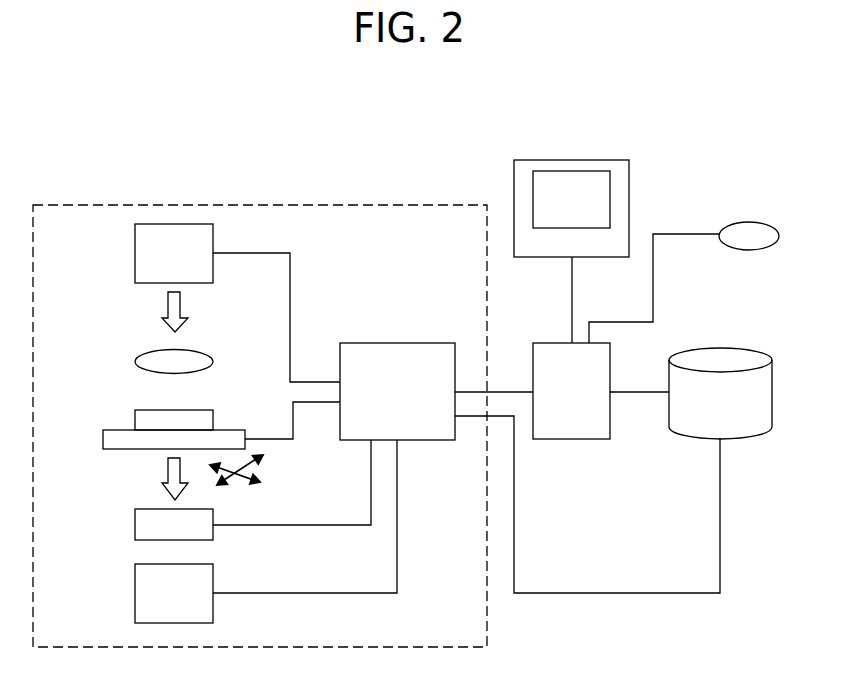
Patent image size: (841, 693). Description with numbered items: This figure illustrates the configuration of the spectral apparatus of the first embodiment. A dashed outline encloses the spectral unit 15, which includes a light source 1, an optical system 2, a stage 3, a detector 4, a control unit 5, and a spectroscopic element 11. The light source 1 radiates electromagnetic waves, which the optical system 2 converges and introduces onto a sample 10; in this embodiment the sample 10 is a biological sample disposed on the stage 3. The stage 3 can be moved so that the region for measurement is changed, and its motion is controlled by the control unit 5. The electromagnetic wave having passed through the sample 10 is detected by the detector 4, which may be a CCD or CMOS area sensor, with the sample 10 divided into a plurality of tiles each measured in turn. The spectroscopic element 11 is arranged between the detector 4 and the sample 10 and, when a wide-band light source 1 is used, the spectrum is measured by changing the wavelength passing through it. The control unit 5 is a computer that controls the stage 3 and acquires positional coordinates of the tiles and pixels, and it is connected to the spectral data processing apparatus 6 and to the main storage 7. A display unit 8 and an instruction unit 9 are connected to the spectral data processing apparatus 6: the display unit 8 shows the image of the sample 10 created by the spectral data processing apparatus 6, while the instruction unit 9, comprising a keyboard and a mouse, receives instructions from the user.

The light source 1 is at (135, 253).
The optical system 2 is at (135, 361).
The stage 3 is at (103, 439).
The detector 4 is at (135, 593).
The control unit 5 is at (397, 343).
The spectral data processing apparatus 6 is at (572, 440).
The main storage 7 is at (720, 348).
The display unit 8 is at (569, 160).
The instruction unit 9 is at (748, 222).
The sample 10 is at (135, 420).
The spectroscopic element 11 is at (135, 525).
The spectral unit 15 is at (265, 205).